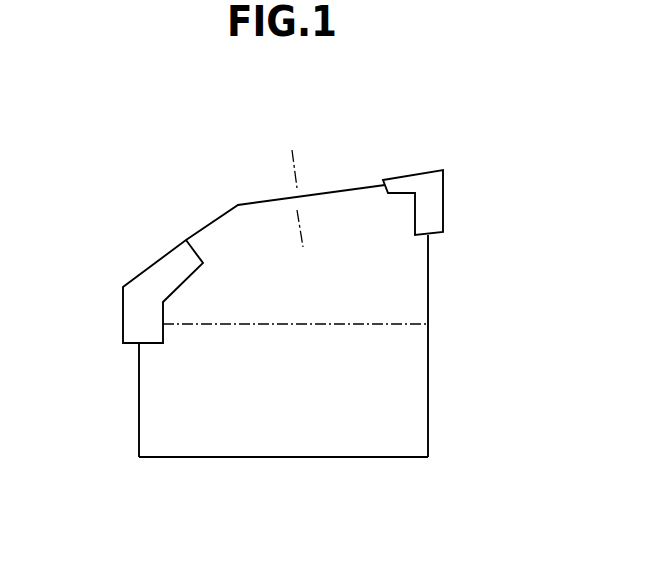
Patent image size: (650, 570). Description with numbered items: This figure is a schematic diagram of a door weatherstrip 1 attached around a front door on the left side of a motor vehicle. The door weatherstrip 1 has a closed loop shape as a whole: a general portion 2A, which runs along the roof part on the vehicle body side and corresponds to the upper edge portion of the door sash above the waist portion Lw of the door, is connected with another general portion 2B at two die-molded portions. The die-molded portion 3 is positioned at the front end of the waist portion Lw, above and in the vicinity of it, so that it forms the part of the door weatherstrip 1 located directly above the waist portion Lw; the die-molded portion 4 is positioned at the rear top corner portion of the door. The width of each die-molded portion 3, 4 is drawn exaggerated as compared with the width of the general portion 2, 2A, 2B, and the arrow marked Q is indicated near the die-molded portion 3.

The door weatherstrip 1 is at (434, 375).
The general portion 2 is at (284, 163).
The general portion 2A is at (350, 188).
The general portion 2B is at (295, 457).
The die-molded portion 3 is at (123, 305).
The die-molded portion 4 is at (445, 198).
The load direction Q is at (177, 207).
The waist portion Lw is at (358, 324).